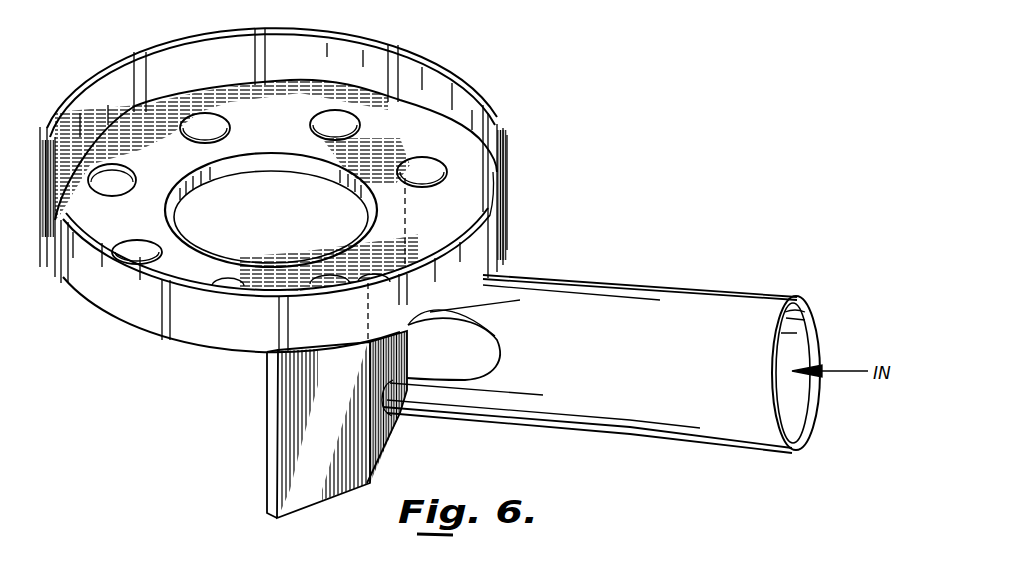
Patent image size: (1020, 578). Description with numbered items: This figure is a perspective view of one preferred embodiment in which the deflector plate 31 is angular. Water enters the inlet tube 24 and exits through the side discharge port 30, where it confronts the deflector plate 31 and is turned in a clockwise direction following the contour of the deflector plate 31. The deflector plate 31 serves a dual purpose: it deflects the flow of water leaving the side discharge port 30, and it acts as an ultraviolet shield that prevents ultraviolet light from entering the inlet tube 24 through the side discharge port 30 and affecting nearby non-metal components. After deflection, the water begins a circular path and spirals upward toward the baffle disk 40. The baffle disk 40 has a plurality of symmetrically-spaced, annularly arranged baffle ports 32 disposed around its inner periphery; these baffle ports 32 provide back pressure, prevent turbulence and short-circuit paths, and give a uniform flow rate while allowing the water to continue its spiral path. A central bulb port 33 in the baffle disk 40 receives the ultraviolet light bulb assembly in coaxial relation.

The inlet tube 24 is at (707, 310).
The side discharge port 30 is at (467, 352).
The deflector plate 31 is at (297, 390).
The baffle ports 32 is at (393, 190).
The bulb port 33 is at (273, 224).
The baffle disk 40 is at (457, 78).